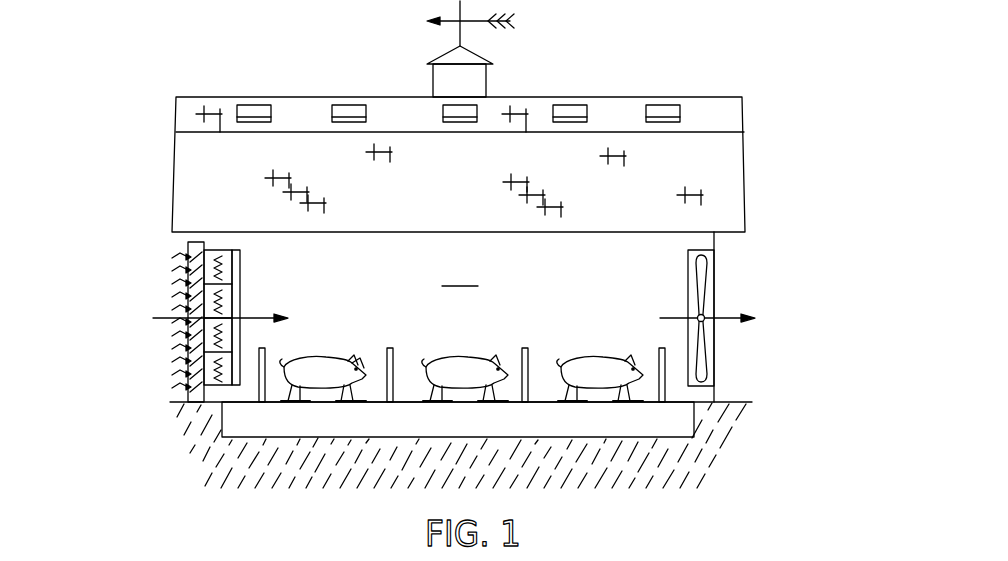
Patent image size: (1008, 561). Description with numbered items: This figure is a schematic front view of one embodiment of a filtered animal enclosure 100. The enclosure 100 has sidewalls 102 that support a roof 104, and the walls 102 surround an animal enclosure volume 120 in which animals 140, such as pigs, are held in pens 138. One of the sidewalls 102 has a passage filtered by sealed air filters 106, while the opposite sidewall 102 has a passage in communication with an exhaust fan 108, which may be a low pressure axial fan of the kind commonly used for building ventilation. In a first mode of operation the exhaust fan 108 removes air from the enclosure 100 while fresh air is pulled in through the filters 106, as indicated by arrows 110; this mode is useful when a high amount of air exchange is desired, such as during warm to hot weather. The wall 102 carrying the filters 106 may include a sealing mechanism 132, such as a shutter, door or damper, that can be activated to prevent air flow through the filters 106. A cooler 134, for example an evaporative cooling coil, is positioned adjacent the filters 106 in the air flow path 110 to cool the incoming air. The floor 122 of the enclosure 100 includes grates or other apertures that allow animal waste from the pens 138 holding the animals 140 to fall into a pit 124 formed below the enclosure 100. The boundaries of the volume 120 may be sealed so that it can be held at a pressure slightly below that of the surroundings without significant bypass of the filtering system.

The animal enclosure 100 is at (805, 110).
The sidewalls 102 is at (193, 398).
The roof 104 is at (213, 97).
The sealed air filters 106 is at (216, 250).
The exhaust fan 108 is at (705, 346).
The arrows 110 is at (250, 318).
The animal enclosure volume 120 is at (460, 275).
The floor 122 is at (513, 405).
The pit 124 is at (449, 435).
The sealing mechanism 132 is at (187, 242).
The cooler 134 is at (243, 262).
The pens 138 is at (353, 353).
The animals 140 is at (318, 357).